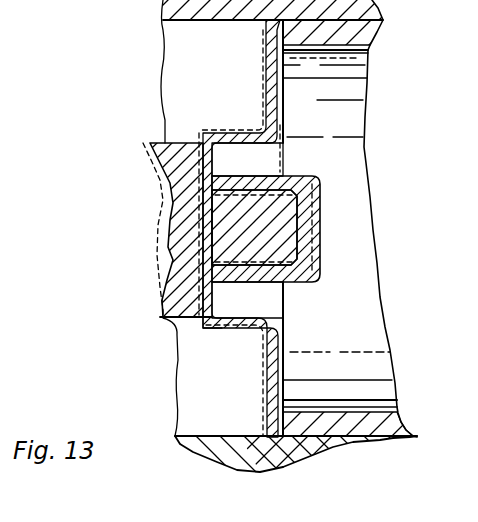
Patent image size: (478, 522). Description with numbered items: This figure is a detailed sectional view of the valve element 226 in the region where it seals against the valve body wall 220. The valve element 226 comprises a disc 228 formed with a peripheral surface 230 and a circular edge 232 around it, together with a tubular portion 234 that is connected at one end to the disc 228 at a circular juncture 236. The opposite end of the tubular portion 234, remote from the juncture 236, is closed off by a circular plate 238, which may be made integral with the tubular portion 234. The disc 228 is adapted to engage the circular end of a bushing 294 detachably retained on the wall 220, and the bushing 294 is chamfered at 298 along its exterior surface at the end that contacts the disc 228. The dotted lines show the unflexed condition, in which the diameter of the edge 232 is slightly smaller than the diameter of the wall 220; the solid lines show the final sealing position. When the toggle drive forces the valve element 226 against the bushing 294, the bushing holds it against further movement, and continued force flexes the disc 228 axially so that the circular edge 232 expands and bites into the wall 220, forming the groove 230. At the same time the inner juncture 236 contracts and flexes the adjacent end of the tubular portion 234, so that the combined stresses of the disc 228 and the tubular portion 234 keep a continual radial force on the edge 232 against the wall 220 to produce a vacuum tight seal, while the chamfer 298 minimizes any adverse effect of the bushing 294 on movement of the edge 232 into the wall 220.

The valve body wall 220 is at (244, 436).
The valve element 226 is at (160, 243).
The disc 228 is at (263, 59).
The peripheral surface 230 is at (250, 467).
The circular edge 232 is at (296, 450).
The tubular portion 234 is at (222, 328).
The circular juncture 236 is at (287, 133).
The circular plate 238 is at (158, 192).
The bushing 294 is at (385, 416).
The chamfer 298 is at (292, 427).